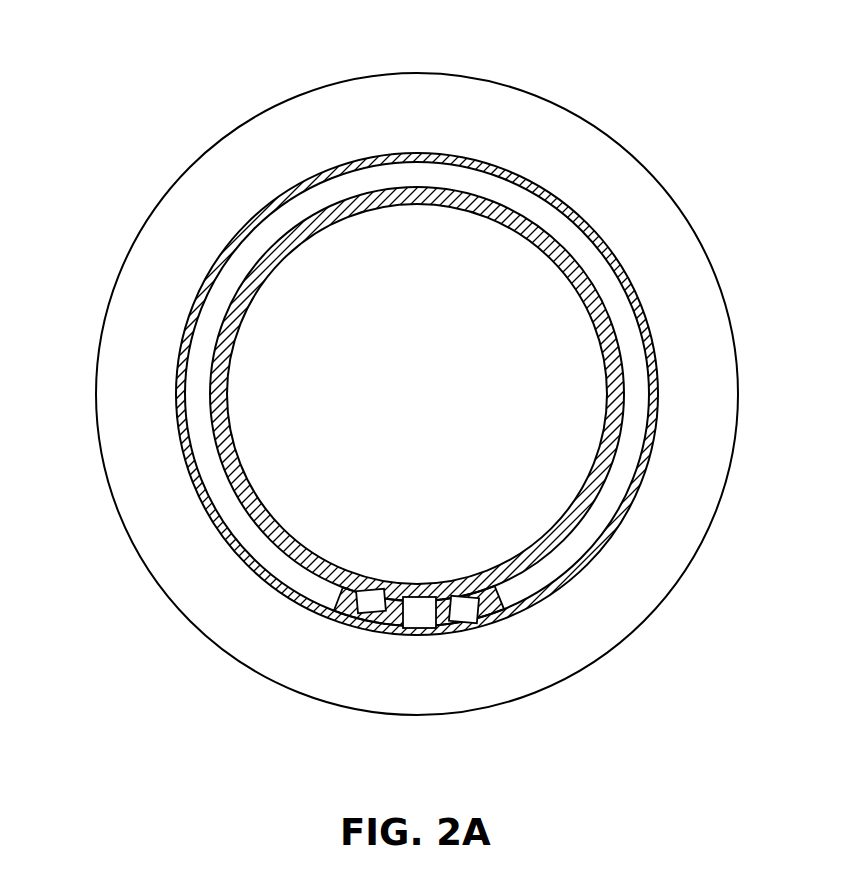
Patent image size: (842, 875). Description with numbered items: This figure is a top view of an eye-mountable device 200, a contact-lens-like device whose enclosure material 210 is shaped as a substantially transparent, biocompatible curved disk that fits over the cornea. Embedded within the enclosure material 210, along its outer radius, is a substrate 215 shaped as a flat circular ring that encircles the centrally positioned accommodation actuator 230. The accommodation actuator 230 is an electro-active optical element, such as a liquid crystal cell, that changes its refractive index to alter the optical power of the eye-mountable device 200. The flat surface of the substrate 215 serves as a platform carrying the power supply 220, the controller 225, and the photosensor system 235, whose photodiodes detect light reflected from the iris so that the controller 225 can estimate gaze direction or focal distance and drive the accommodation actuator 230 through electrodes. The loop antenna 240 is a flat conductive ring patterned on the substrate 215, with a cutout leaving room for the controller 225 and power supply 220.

The eye-mountable device 200 is at (409, 399).
The enclosure material 210 is at (131, 548).
The substrate 215 is at (602, 538).
The power supply 220 is at (363, 603).
The controller 225 is at (418, 615).
The accommodation actuator 230 is at (372, 352).
The photosensor system 235 is at (384, 441).
The loop antenna 240 is at (540, 573).